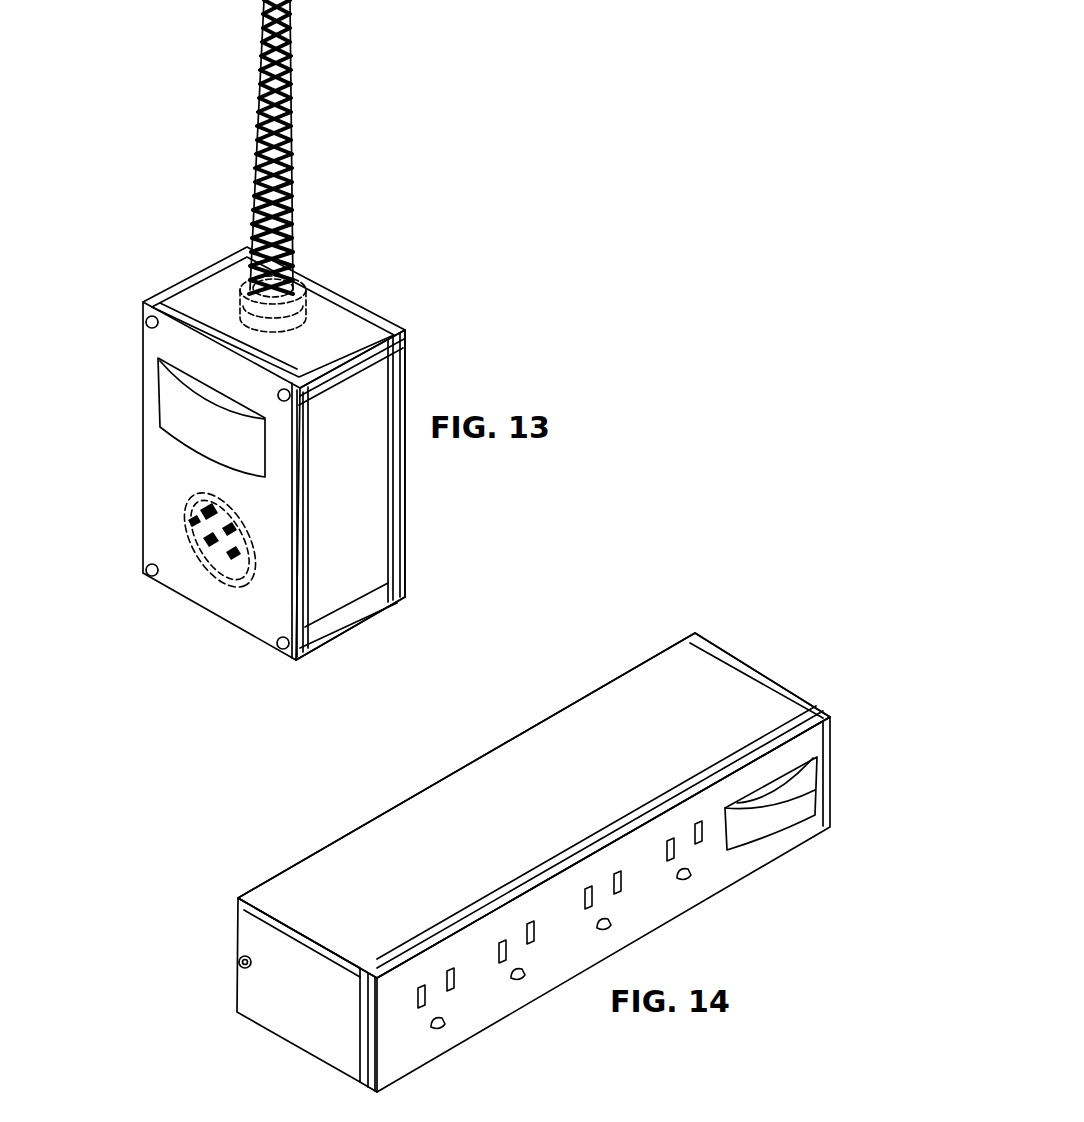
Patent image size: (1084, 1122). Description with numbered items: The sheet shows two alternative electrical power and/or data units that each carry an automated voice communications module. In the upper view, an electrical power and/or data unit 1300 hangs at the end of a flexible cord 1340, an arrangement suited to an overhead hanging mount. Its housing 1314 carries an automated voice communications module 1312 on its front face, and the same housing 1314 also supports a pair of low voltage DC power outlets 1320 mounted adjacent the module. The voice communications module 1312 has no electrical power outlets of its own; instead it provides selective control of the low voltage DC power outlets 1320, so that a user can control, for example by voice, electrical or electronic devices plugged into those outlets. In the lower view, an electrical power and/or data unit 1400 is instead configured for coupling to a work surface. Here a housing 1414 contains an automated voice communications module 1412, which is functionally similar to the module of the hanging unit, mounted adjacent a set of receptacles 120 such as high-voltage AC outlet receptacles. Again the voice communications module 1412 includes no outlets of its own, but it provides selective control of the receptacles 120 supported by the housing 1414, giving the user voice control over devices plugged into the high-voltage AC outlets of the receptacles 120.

In FIG. 13, the electrical power and/or data unit 1300 is at (237, 390).
In FIG. 13, the flexible cord 1340 is at (292, 152).
In FIG. 13, the automated voice communications module 1312 is at (180, 420).
In FIG. 13, the low voltage DC power outlets 1320 is at (185, 513).
In FIG. 13, the housing 1314 is at (410, 529).
In FIG. 14, the electrical power and/or data unit 1400 is at (758, 622).
In FIG. 14, the housing 1414 is at (581, 728).
In FIG. 14, the automated voice communications module 1412 is at (768, 824).
In FIG. 14, the receptacles 120 is at (472, 955).